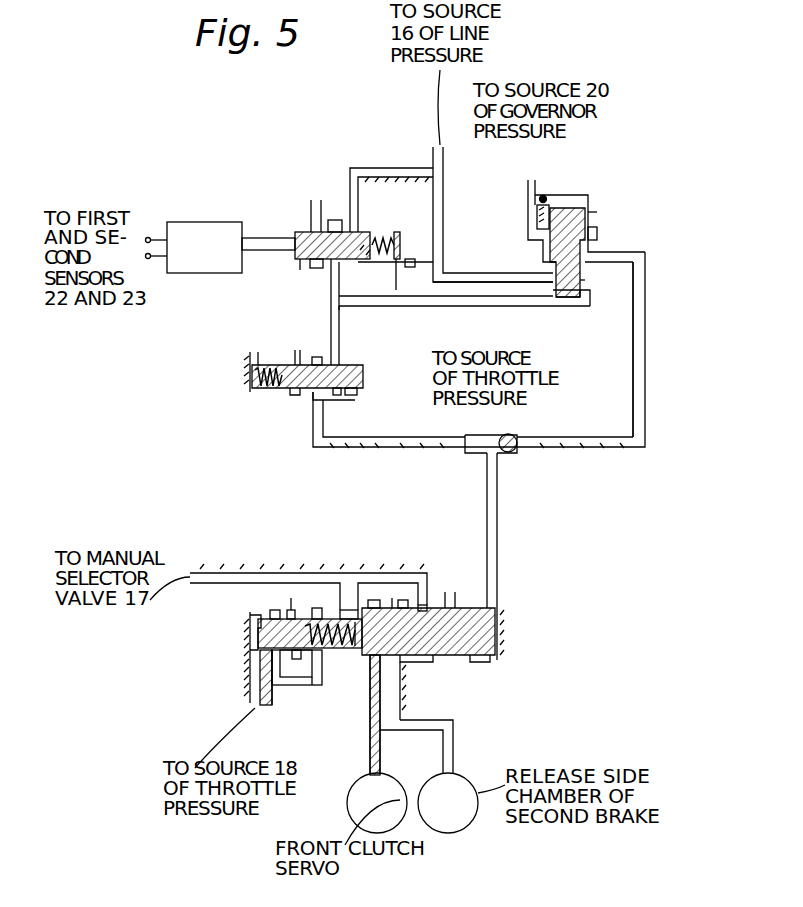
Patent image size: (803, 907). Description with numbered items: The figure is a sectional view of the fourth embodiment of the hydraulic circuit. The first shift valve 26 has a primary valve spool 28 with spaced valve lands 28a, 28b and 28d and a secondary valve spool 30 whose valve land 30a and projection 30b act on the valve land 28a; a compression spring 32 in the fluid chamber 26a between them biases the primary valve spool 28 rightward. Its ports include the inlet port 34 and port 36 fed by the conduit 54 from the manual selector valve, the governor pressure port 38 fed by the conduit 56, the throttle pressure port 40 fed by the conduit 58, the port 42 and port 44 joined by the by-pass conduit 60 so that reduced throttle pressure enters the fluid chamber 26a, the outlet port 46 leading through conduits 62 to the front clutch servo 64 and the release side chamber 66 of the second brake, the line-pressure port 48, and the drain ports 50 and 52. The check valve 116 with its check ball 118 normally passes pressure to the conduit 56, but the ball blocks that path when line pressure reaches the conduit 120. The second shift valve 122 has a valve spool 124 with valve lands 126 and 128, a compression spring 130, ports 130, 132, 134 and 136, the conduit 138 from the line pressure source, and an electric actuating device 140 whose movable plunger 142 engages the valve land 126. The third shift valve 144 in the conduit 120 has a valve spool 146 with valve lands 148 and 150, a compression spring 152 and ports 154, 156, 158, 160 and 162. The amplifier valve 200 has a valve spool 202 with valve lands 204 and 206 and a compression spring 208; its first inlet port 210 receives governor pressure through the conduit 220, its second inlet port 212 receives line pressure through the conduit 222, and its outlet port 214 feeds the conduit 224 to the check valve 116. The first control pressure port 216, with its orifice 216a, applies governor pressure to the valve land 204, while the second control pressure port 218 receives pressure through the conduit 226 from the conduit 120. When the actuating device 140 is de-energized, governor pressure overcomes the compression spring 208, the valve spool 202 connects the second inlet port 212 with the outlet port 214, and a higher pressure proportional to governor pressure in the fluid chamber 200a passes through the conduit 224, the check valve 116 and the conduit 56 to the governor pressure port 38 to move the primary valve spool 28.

The first shift valve 26 is at (520, 645).
The fluid chamber 26a is at (368, 690).
The primary valve spool 28 is at (505, 630).
The valve land 28a is at (382, 745).
The valve land 28b is at (418, 662).
The valve land 28d is at (498, 658).
The secondary valve spool 30 is at (252, 638).
The valve land 30a is at (252, 618).
The projection 30b is at (290, 615).
The compression spring 32 is at (332, 650).
The inlet port 34 is at (352, 608).
The port 36 is at (428, 608).
The governor pressure port 38 is at (500, 598).
The throttle pressure port 40 is at (253, 658).
The port 42 is at (272, 700).
The port 44 is at (318, 690).
The outlet port 46 is at (402, 668).
The port 48 is at (280, 612).
The drain port 50 is at (395, 610).
The drain port 52 is at (455, 600).
The conduit 54 is at (308, 610).
The conduit 56 is at (498, 525).
The conduit 58 is at (250, 690).
The by-pass conduit 60 is at (298, 686).
The conduits 62 is at (455, 722).
The front clutch servo 64 is at (391, 816).
The release side chamber of second brake 66 is at (462, 816).
The check valve 116 is at (494, 432).
The check ball 118 is at (515, 455).
The conduit 120 is at (325, 365).
The second shift valve 122 is at (477, 195).
The valve spool 124 is at (325, 268).
The valve land 126 is at (322, 255).
The valve land 128 is at (402, 235).
The compression spring 130 is at (410, 216).
The port 132 is at (331, 285).
The drain port 134 is at (313, 212).
The drain port 136 is at (412, 267).
The conduit 138 is at (432, 168).
The electric actuating device 140 is at (200, 235).
The movable plunger 142 is at (268, 243).
The third shift valve 144 is at (419, 330).
The valve spool 146 is at (335, 395).
The valve land 148 is at (300, 390).
The valve land 150 is at (358, 390).
The compression spring 152 is at (258, 386).
The port 154 is at (297, 352).
The port 156 is at (313, 397).
The port 158 is at (358, 368).
The port 160 is at (262, 345).
The port 162 is at (252, 358).
The amplifier valve 200 is at (605, 180).
The fluid chamber 200a is at (600, 275).
The valve spool 202 is at (598, 230).
The valve land 204 is at (588, 212).
The valve land 206 is at (588, 280).
The compression spring 208 is at (582, 300).
The first inlet port 210 is at (548, 240).
The second inlet port 212 is at (556, 295).
The outlet port 214 is at (600, 268).
The first control pressure port 216 is at (548, 200).
The orifice 216a is at (538, 200).
The second control pressure port 218 is at (568, 300).
The conduit 220 is at (532, 200).
The conduit 222 is at (475, 275).
The conduit 224 is at (633, 397).
The conduit 226 is at (425, 310).